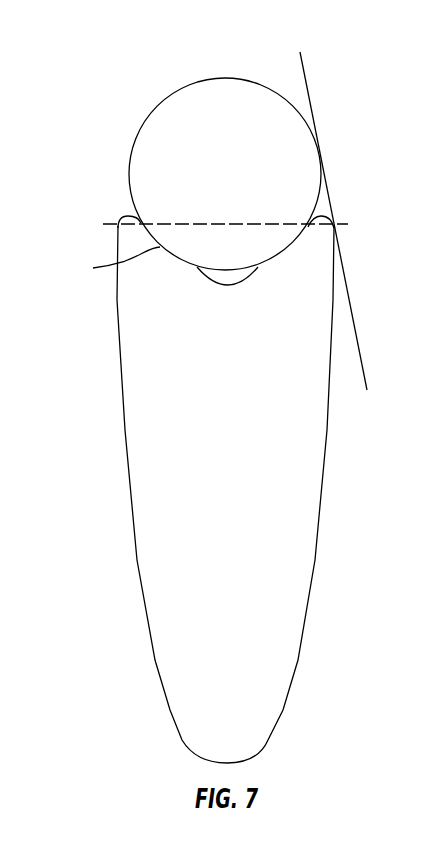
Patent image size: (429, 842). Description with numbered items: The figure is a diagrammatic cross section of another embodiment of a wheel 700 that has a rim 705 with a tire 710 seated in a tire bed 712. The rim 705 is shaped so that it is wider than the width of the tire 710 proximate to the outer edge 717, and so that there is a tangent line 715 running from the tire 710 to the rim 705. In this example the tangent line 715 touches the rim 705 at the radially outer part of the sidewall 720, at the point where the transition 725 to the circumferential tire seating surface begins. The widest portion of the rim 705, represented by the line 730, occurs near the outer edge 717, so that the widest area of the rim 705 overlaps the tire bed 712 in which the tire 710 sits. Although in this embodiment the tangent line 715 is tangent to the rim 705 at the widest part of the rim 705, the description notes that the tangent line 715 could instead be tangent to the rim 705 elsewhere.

The wheel 700 is at (143, 58).
The rim 705 is at (308, 283).
The tire 710 is at (157, 122).
The tire bed 712 is at (109, 265).
The tangent line 715 is at (303, 63).
The outer edge 717 is at (132, 217).
The sidewall 720 is at (332, 383).
The transition 725 is at (335, 220).
The line 730 is at (237, 226).